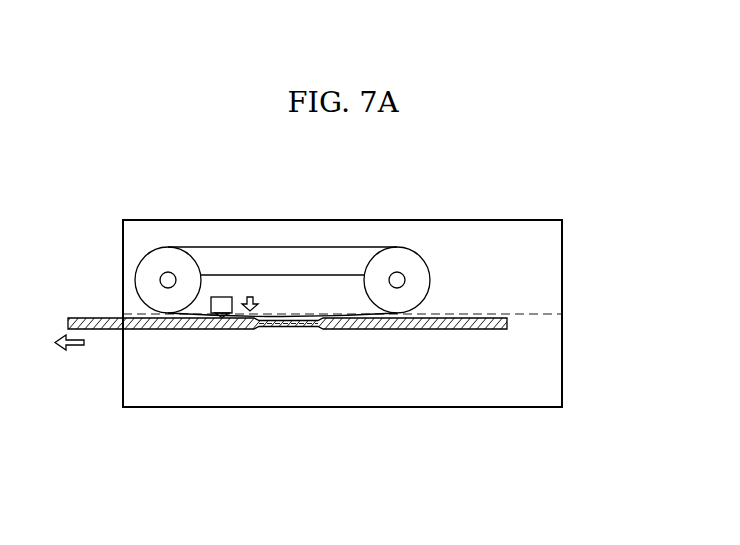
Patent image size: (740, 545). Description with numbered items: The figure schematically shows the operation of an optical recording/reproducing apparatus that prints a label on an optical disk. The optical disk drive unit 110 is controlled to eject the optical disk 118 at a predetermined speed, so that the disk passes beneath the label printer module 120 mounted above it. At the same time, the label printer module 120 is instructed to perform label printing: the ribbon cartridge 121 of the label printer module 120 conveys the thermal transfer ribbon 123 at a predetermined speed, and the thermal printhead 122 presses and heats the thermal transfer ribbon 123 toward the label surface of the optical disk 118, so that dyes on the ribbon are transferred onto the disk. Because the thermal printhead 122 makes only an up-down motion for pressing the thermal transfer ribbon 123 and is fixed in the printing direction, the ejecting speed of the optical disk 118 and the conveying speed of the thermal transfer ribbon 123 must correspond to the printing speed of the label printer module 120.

The optical disk drive unit 110 is at (509, 407).
The optical disk 118 is at (407, 330).
The label printer module 120 is at (509, 220).
The ribbon cartridge 121 is at (292, 258).
The thermal printhead 122 is at (223, 296).
The thermal transfer ribbon 123 is at (341, 316).